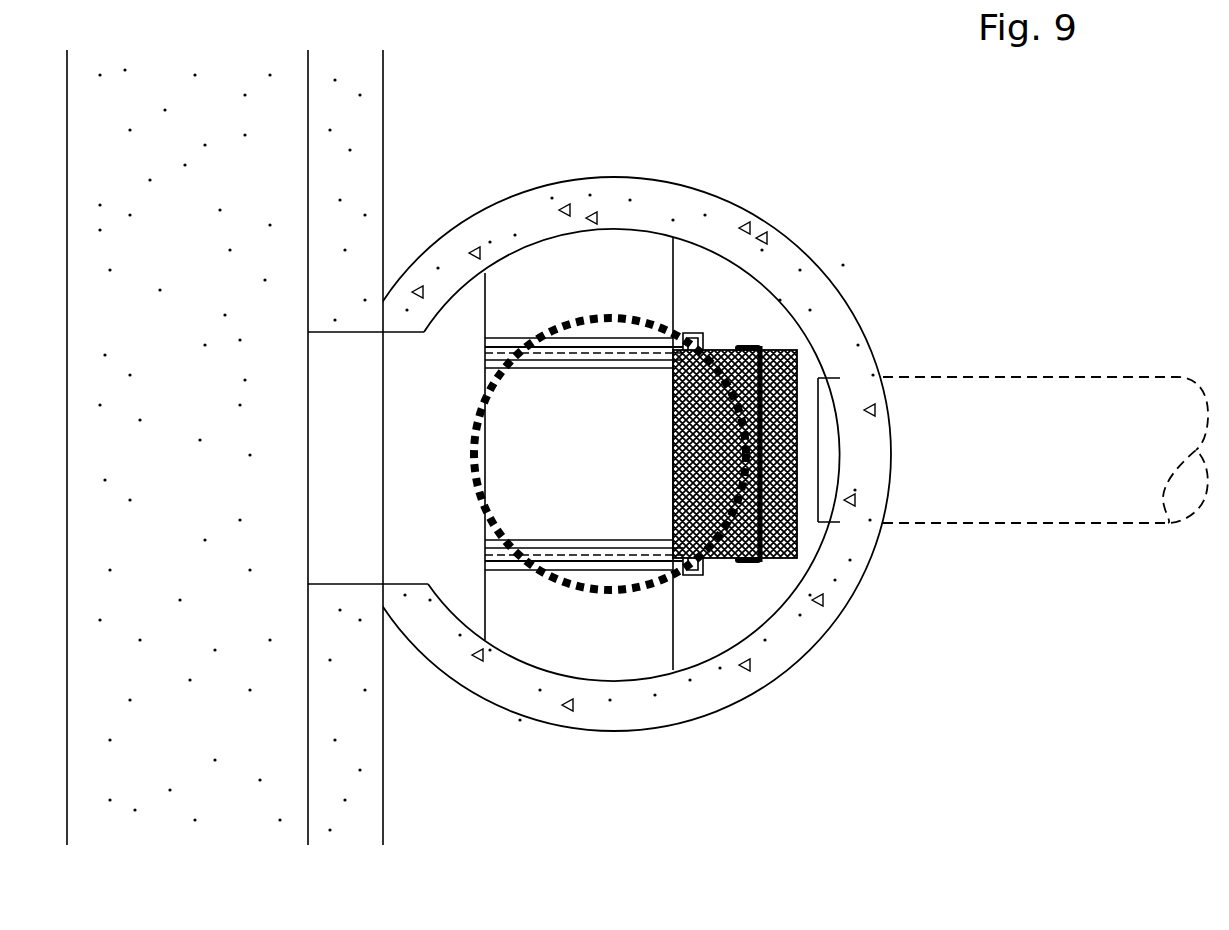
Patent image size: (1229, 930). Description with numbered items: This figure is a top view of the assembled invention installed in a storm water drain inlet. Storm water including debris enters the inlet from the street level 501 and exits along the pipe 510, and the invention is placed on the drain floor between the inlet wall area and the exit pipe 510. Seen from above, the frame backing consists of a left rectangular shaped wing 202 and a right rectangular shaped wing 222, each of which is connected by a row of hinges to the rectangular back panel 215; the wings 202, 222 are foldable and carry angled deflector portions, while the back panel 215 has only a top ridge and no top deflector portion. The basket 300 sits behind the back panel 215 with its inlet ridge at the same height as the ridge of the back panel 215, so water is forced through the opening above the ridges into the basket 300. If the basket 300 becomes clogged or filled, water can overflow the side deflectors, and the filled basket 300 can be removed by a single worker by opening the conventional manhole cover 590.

The left rectangular shaped wing 202 is at (541, 288).
The manhole cover 590 is at (627, 318).
The back panel 215 is at (618, 417).
The basket 300 is at (798, 382).
The street level 501 is at (365, 435).
The pipe 510 is at (1017, 493).
The right rectangular shaped wing 222 is at (600, 643).